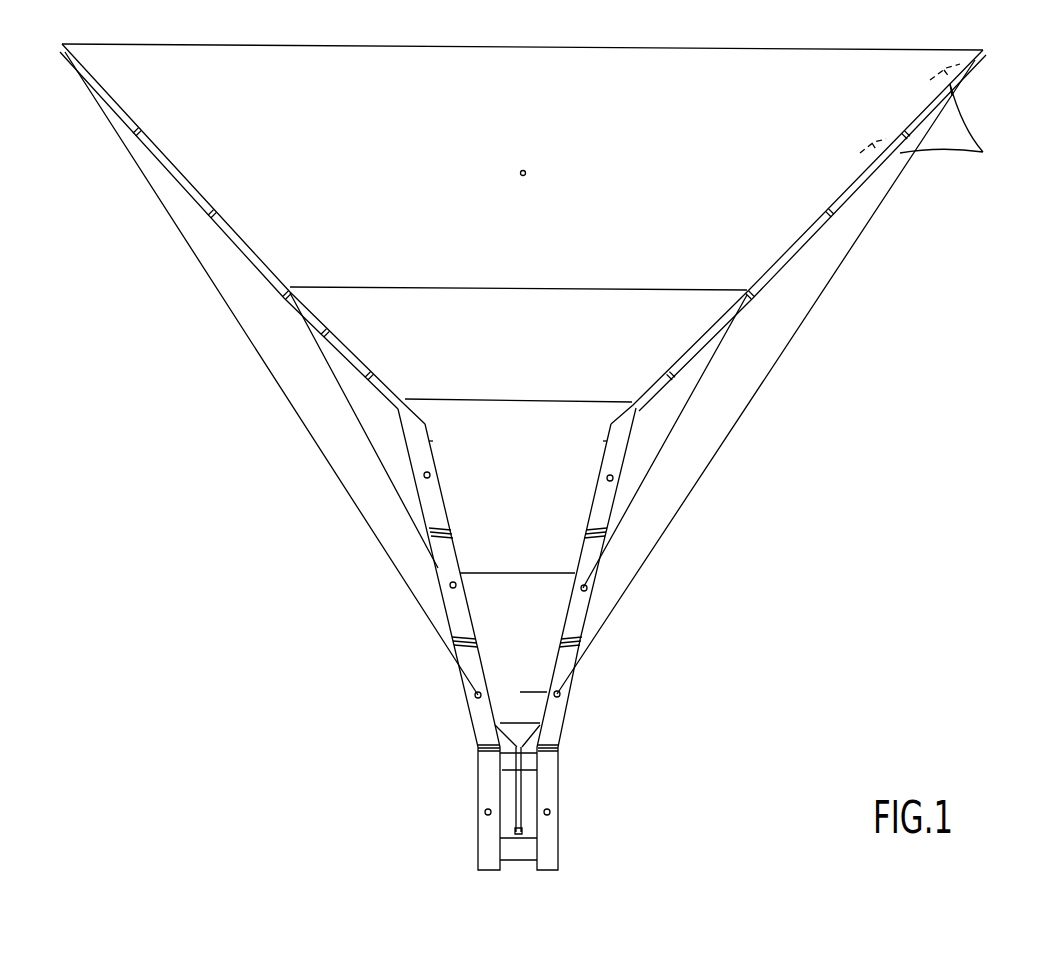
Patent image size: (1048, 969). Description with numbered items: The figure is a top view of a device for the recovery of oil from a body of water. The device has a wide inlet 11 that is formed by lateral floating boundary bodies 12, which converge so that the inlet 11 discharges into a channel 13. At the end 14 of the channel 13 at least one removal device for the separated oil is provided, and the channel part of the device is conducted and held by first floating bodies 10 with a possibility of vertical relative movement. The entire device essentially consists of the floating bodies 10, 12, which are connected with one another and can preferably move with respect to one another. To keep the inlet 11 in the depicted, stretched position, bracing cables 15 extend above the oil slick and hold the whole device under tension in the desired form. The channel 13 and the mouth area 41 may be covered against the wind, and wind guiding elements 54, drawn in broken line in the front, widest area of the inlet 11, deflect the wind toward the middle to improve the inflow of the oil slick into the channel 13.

The first floating bodies 10 is at (427, 477).
The inlet 11 is at (525, 177).
The lateral floating boundary bodies 12 is at (233, 235).
The channel 13 is at (522, 773).
The end of the channel 14 is at (520, 832).
The bracing cables 15 is at (522, 47).
The mouth area 41 is at (523, 727).
The wind guiding elements 54 is at (946, 118).